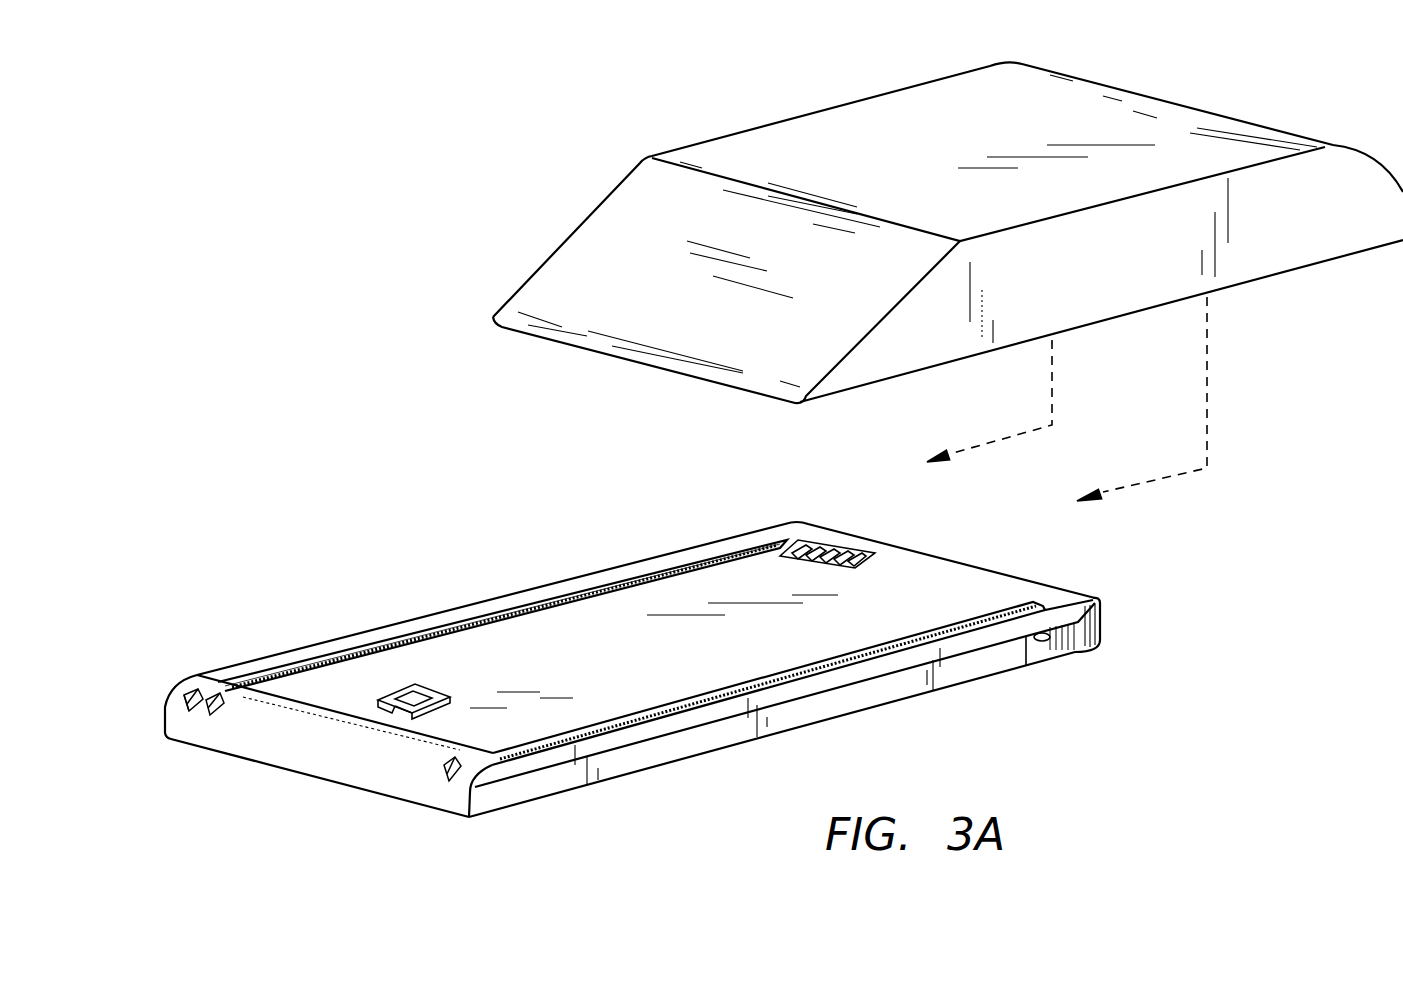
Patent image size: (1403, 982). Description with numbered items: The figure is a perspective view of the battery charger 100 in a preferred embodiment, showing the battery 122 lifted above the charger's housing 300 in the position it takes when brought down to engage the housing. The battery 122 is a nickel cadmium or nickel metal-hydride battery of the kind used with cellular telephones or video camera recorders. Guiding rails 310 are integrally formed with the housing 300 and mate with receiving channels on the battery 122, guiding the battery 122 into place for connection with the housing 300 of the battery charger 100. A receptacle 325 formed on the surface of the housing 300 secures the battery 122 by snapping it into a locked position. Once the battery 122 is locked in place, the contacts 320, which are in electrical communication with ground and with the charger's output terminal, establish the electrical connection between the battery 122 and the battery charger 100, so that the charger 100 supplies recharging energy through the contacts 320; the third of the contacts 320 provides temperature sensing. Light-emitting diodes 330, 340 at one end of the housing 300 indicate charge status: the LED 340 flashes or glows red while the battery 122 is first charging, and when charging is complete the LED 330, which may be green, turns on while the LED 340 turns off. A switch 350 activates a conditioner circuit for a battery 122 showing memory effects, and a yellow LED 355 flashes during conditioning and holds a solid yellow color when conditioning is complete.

The battery charger 100 is at (348, 572).
The battery 122 is at (882, 133).
The housing 300 is at (943, 568).
The guiding rails 310 is at (502, 607).
The contacts 320 is at (812, 542).
The receptacle 325 is at (428, 690).
The LED 330 is at (197, 690).
The LED 340 is at (215, 712).
The switch 350 is at (1048, 638).
The yellow LED 355 is at (450, 777).